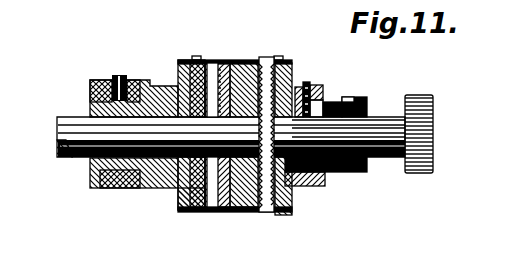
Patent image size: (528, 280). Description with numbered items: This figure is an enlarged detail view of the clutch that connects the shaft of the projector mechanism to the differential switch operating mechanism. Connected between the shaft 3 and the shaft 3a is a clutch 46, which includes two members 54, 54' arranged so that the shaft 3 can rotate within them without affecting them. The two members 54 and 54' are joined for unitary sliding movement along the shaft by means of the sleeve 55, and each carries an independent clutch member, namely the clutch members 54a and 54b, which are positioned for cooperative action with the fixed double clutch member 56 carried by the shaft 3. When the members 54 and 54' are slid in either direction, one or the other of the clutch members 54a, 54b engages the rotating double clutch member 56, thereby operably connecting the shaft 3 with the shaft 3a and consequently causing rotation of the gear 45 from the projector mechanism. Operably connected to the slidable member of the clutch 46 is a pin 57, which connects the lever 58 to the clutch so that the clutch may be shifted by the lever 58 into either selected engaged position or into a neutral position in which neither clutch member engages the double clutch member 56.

The shaft 3 is at (65, 165).
The shaft 3a is at (388, 116).
The gear 45 is at (428, 97).
The clutch 46 is at (241, 45).
The clutch member 54 is at (221, 121).
The clutch member 54' is at (320, 85).
The independent clutch member 54a is at (178, 193).
The independent clutch member 54b is at (290, 193).
The sleeve 55 is at (258, 60).
The fixed double clutch member 56 is at (228, 62).
The pin 57 is at (119, 75).
The lever 58 is at (98, 80).